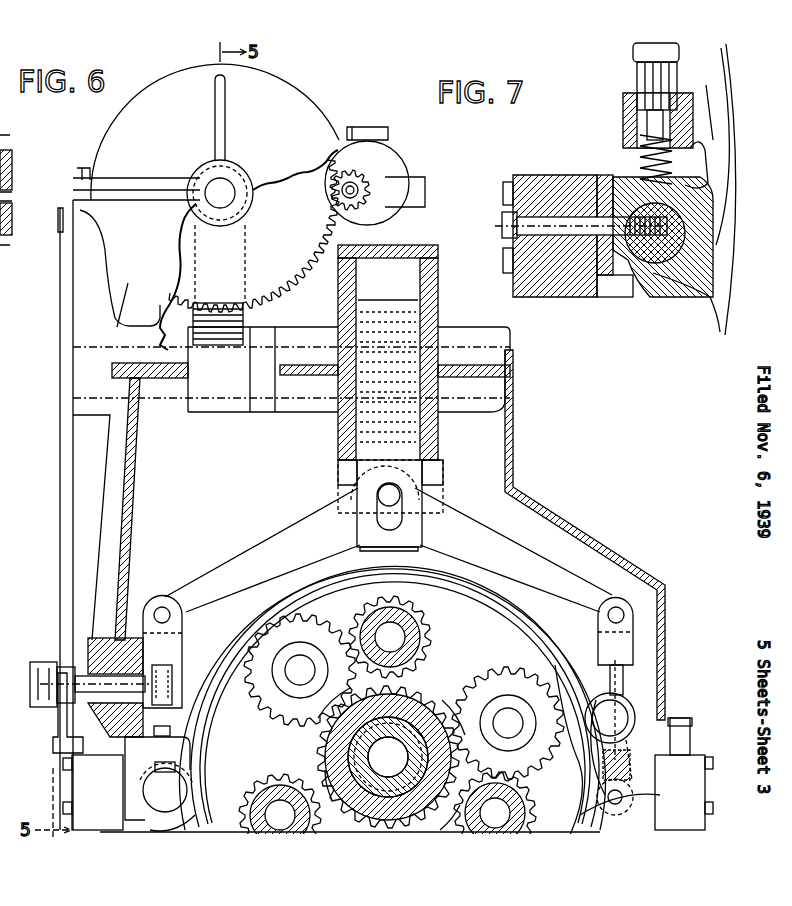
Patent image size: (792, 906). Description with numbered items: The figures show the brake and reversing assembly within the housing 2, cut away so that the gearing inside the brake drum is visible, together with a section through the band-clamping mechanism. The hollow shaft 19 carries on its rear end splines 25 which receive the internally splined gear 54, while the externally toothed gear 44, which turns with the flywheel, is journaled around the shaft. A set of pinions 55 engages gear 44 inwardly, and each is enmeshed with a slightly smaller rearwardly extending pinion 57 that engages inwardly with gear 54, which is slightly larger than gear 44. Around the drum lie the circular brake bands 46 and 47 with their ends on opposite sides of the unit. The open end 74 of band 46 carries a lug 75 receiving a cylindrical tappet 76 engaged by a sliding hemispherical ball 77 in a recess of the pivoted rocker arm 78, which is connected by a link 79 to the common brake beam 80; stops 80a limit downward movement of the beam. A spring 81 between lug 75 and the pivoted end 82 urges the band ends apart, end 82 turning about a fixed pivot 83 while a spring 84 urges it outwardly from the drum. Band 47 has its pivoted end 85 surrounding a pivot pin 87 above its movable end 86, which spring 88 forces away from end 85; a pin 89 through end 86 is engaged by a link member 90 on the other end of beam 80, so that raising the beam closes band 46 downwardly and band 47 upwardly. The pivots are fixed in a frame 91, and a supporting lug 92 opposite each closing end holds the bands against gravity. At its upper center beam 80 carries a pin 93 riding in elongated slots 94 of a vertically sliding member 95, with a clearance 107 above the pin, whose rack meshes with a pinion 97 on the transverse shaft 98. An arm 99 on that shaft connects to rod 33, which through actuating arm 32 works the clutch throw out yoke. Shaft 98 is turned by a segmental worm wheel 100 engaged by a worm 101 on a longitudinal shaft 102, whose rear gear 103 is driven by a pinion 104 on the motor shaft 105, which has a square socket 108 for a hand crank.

In FIG. 6, the housing 2 is at (585, 538).
In FIG. 6, the hollow shaft 19 is at (410, 720).
In FIG. 6, the splines 25 is at (425, 720).
In FIG. 6, the actuating arm 32 is at (50, 732).
In FIG. 6, the rod 33 is at (63, 548).
In FIG. 6, the gear 44 is at (325, 738).
In FIG. 6, the brake band 46 is at (190, 690).
In FIG. 7, the brake band 46 is at (720, 330).
In FIG. 6, the brake band 47 is at (500, 605).
In FIG. 6, the gear 54 is at (318, 772).
In FIG. 6, the pinions 55 is at (330, 635).
In FIG. 6, the pinions 57 is at (425, 620).
In FIG. 6, the open end 74 is at (200, 706).
In FIG. 7, the open end 74 is at (707, 86).
In FIG. 6, the lug 75 is at (145, 725).
In FIG. 7, the lug 75 is at (623, 120).
In FIG. 7, the cylindrical tappet 76 is at (640, 80).
In FIG. 7, the hemispherical ball 77 is at (636, 50).
In FIG. 6, the rocker arm 78 is at (157, 687).
In FIG. 6, the link 79 is at (182, 628).
In FIG. 6, the brake beam 80 is at (262, 550).
In FIG. 6, the stops 80a is at (148, 605).
In FIG. 7, the spring 81 is at (640, 158).
In FIG. 6, the pivoted end 82 is at (172, 806).
In FIG. 7, the pivoted end 82 is at (690, 145).
In FIG. 6, the fixed pivot 83 is at (168, 802).
In FIG. 7, the fixed pivot 83 is at (680, 243).
In FIG. 7, the spring 84 is at (653, 240).
In FIG. 6, the pivoted end 85 is at (628, 712).
In FIG. 6, the movable end 86 is at (582, 818).
In FIG. 6, the pivot pin 87 is at (618, 735).
In FIG. 6, the spring 88 is at (632, 765).
In FIG. 6, the pin 89 is at (625, 797).
In FIG. 6, the link member 90 is at (622, 665).
In FIG. 6, the frame 91 is at (107, 790).
In FIG. 6, the supporting lug 92 is at (183, 765).
In FIG. 6, the pin 93 is at (387, 497).
In FIG. 6, the elongated slots 94 is at (396, 522).
In FIG. 6, the vertically sliding member 95 is at (365, 458).
In FIG. 6, the pinion 97 is at (400, 345).
In FIG. 6, the shaft 98 is at (512, 380).
In FIG. 6, the arm 99 is at (73, 303).
In FIG. 6, the segmental worm wheel 100 is at (230, 303).
In FIG. 6, the worm 101 is at (248, 198).
In FIG. 6, the longitudinal shaft 102 is at (228, 190).
In FIG. 6, the gear 103 is at (292, 252).
In FIG. 6, the pinion 104 is at (362, 182).
In FIG. 6, the shaft 105 is at (352, 202).
In FIG. 6, the clearance 107 is at (392, 485).
In FIG. 6, the square socket 108 is at (350, 185).